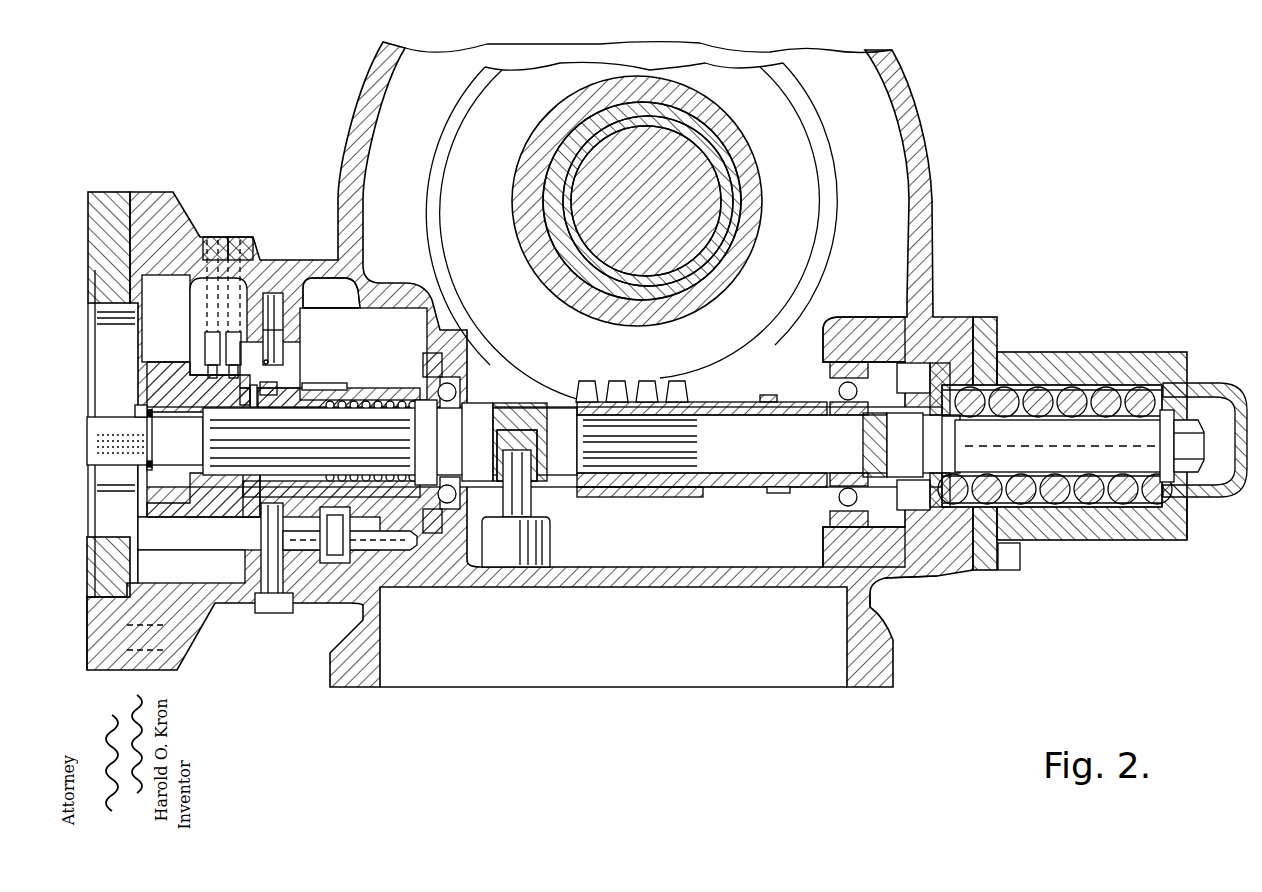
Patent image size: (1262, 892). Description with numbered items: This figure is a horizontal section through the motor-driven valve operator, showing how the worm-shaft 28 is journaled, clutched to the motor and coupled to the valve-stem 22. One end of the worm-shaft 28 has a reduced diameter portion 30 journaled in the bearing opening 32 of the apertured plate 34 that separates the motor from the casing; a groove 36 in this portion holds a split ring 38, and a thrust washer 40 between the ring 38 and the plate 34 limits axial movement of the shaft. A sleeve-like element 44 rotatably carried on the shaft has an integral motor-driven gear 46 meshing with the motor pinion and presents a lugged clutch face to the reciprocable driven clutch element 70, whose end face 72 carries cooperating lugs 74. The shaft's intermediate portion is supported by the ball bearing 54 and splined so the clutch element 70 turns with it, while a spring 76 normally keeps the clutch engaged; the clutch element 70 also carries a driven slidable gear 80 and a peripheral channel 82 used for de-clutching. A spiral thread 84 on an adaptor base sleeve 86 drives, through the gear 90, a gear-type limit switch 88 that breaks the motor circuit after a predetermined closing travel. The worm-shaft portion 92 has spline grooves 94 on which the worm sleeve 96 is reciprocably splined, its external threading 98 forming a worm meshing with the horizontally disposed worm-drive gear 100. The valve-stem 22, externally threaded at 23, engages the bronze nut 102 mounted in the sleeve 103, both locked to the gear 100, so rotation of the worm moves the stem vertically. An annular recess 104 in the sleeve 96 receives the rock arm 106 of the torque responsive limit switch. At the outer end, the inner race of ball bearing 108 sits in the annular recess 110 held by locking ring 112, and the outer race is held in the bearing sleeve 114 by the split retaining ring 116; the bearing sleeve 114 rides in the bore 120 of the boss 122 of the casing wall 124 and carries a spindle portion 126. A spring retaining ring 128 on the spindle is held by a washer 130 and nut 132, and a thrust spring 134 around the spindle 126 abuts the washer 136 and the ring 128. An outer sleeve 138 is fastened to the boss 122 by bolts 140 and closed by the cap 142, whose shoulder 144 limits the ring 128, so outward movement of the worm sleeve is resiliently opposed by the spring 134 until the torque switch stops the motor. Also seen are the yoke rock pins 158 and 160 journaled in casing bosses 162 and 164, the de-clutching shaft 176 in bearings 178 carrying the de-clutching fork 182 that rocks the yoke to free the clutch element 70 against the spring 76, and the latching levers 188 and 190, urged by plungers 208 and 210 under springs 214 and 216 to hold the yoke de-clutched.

The valve-stem 22 is at (716, 212).
The external threading 23 is at (727, 191).
The worm-shaft 28 is at (397, 407).
The reduced diameter portion 30 is at (100, 447).
The bearing opening 32 is at (90, 400).
The apertured plate 34 is at (95, 658).
The groove 36 is at (153, 428).
The split ring 38 is at (146, 416).
The thrust washer 40 is at (136, 406).
The sleeve-like element 44 is at (199, 518).
The motor-driven gear 46 is at (166, 362).
The ball bearing 54 is at (456, 381).
The reciprocable driven clutch element 70 is at (310, 384).
The end face 72 is at (232, 492).
The lugs 74 is at (250, 500).
The spring 76 is at (372, 401).
The driven and slidable gear 80 is at (342, 386).
The peripheral groove or channel 82 is at (278, 385).
The spiral thread 84 is at (513, 403).
The adaptor base sleeve 86 is at (478, 414).
The gear-type limit switch 88 is at (551, 550).
The gear 90 is at (532, 440).
The worm-shaft portion 92 is at (716, 474).
The spline grooves 94 is at (636, 470).
The worm sleeve 96 is at (726, 402).
The external threading 98 is at (668, 385).
The worm-drive gear 100 is at (805, 257).
The bronze nut 102 is at (736, 168).
The sleeve 103 is at (742, 140).
The annular recess 104 is at (775, 400).
The rock arm 106 is at (779, 494).
The ball bearing 108 is at (830, 506).
The annular recess 110 is at (834, 503).
The locking ring 112 is at (872, 390).
The bearing sleeve 114 is at (912, 565).
The split retaining ring 116 is at (836, 376).
The bore 120 is at (888, 580).
The boss 122 is at (957, 573).
The casing wall 124 is at (932, 283).
The spindle portion 126 is at (1060, 446).
The spring retaining ring 128 is at (1186, 394).
The washer 130 is at (1180, 478).
The nut 132 is at (1180, 422).
The thrust spring 134 is at (1092, 504).
The washer 136 is at (998, 370).
The outer sleeve 138 is at (1088, 360).
The bolts 140 is at (1021, 562).
The cap 142 is at (1188, 520).
The shoulder 144 is at (1142, 505).
The rock shafts or pins 158 is at (273, 614).
The rock shafts or pins 160 is at (283, 356).
The boss 162 is at (259, 563).
The boss 164 is at (303, 318).
The de-clutching shaft 176 is at (352, 526).
The bearings 178 is at (302, 551).
The de-clutching fork or link 182 is at (350, 518).
The latching lever 188 is at (228, 360).
The latching lever 190 is at (243, 388).
The plunger 208 is at (207, 338).
The plunger 210 is at (283, 345).
The spring 214 is at (214, 236).
The spring 216 is at (246, 236).